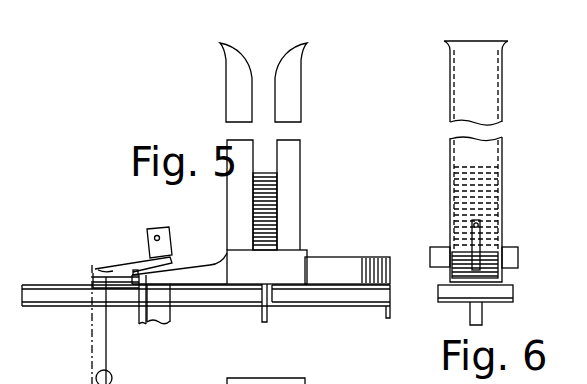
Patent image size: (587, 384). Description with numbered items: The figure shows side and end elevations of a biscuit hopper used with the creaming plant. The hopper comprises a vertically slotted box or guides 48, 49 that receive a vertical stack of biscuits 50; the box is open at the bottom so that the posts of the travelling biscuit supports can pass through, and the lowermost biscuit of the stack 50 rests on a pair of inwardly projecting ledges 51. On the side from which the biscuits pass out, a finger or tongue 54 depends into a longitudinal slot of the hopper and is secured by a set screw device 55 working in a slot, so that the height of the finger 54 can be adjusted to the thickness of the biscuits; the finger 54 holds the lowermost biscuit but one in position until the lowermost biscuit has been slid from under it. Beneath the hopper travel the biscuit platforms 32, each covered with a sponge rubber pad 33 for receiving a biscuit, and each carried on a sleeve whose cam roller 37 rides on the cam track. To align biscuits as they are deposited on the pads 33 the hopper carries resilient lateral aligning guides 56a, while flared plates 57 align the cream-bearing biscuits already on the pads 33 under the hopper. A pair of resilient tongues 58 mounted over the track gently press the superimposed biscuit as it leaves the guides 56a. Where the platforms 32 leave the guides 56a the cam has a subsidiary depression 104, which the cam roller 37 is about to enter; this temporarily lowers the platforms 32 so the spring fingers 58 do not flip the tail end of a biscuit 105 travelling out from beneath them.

In FIG. 5, the platform 32 is at (68, 304).
In FIG. 6, the platform 32 is at (500, 302).
In FIG. 5, the sponge rubber pad 33 is at (28, 295).
In FIG. 5, the cam roller 37 is at (112, 378).
In FIG. 5, the vertically slotted box or guide 48 is at (236, 110).
In FIG. 5, the vertically slotted box or guide 49 is at (286, 103).
In FIG. 5, the stack of biscuits 50 is at (268, 190).
In FIG. 6, the stack of biscuits 50 is at (503, 268).
In FIG. 5, the inwardly projecting ledge 51 is at (288, 375).
In FIG. 6, the finger or tongue 54 is at (477, 242).
In FIG. 6, the set screw device 55 is at (478, 224).
In FIG. 5, the aligning guide 56a is at (191, 265).
In FIG. 6, the aligning guide 56a is at (450, 262).
In FIG. 5, the flared plate 57 is at (343, 272).
In FIG. 5, the resilient tongue 58 is at (128, 270).
In FIG. 5, the subsidiary depression 104 is at (67, 324).
In FIG. 5, the biscuit 105 is at (108, 283).